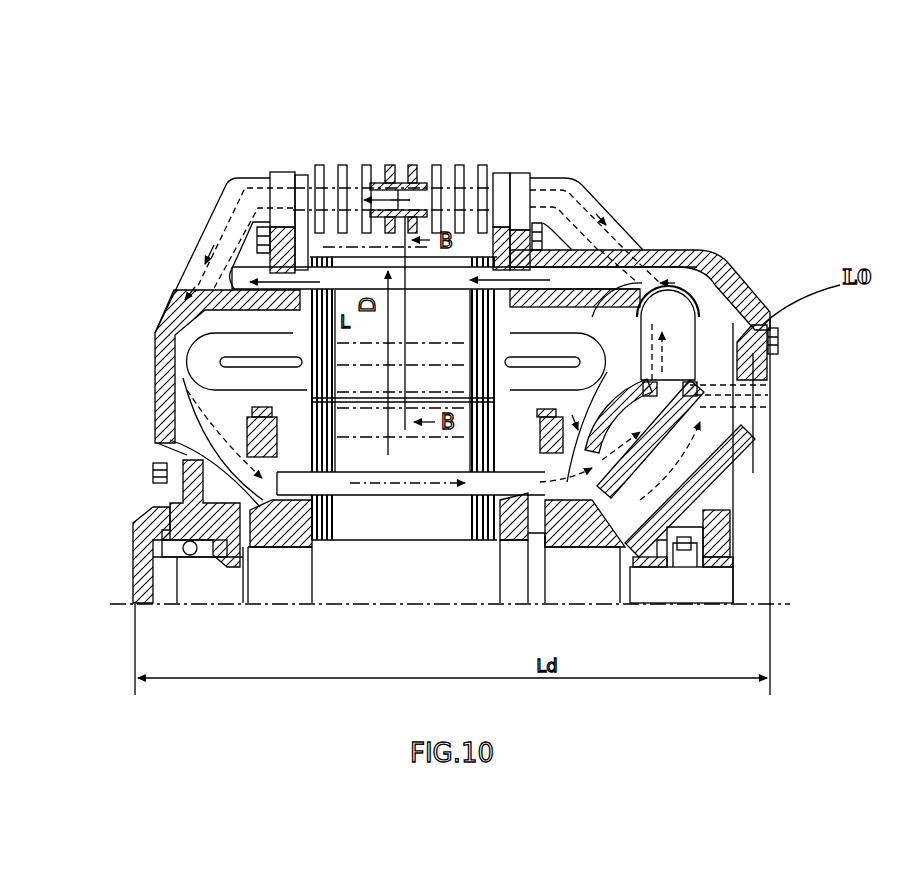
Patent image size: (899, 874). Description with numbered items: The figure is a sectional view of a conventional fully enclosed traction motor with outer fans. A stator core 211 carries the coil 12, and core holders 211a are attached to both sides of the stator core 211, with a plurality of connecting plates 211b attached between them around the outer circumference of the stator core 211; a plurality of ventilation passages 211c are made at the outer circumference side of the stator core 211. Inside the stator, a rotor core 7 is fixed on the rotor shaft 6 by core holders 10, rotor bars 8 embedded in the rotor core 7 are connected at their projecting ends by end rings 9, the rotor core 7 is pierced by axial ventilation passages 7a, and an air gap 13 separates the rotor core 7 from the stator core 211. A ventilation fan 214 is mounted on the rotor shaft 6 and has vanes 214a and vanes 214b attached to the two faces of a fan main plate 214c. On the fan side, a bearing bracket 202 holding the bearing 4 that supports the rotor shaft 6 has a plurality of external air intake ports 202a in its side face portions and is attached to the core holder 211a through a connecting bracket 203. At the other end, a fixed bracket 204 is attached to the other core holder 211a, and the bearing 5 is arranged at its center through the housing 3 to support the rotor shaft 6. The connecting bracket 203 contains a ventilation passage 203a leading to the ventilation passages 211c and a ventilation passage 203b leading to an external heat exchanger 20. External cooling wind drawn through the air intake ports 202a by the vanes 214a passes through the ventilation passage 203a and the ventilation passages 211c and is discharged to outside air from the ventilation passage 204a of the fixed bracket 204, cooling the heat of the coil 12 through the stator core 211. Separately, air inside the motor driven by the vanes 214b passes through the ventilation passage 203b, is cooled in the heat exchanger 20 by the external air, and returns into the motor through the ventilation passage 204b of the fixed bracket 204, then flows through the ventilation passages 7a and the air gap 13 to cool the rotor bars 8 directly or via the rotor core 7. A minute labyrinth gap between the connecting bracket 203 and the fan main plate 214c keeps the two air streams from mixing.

The housing 3 is at (180, 495).
The bearing 4 is at (687, 550).
The bearing 5 is at (190, 556).
The rotor shaft 6 is at (567, 583).
The rotor core 7 is at (405, 455).
The ventilation passages 7a is at (462, 495).
The rotor bars 8 is at (312, 545).
The end rings 9 is at (262, 430).
The core holders 10 is at (187, 448).
The coil 12 is at (167, 342).
The air gap 13 is at (355, 420).
The heat exchanger 20 is at (407, 166).
The bearing bracket 202 is at (775, 312).
The external air intake ports 202a is at (740, 485).
The connecting bracket 203 is at (693, 253).
The ventilation passage 203a is at (657, 250).
The ventilation passage 203b is at (572, 192).
The fixed bracket 204 is at (236, 180).
The ventilation passage 204a is at (215, 258).
The ventilation passage 204b is at (210, 260).
The stator core 211 is at (460, 293).
The core holders 211a is at (300, 172).
The connecting plates 211b is at (447, 200).
The ventilation passages 211c is at (360, 280).
The ventilation fan 214 is at (605, 522).
The vanes 214a is at (735, 440).
The vanes 214b is at (740, 398).
The fan main plate 214c is at (705, 420).